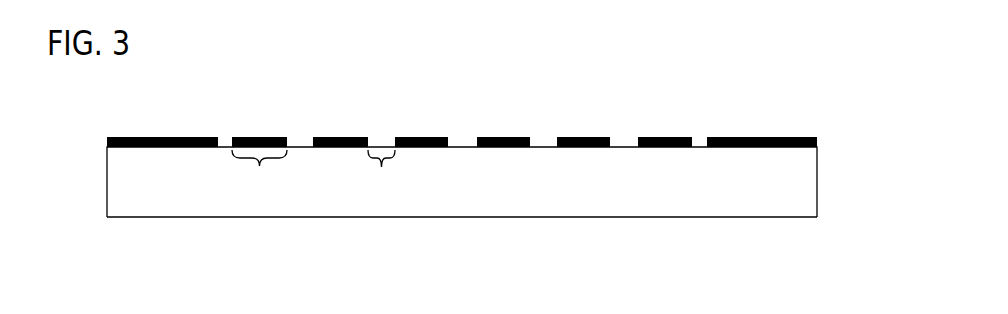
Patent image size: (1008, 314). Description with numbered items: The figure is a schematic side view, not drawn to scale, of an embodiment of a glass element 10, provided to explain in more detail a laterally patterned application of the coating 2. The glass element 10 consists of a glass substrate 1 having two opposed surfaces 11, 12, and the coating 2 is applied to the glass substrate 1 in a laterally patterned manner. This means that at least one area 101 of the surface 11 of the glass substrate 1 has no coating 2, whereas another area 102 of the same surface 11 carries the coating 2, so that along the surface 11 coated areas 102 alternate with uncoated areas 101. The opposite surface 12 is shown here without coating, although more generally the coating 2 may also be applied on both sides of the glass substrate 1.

The glass substrate 1 is at (187, 195).
The coating 2 is at (758, 137).
The glass element 10 is at (477, 68).
The surface 11 is at (305, 147).
The surface 12 is at (330, 217).
The area 101 is at (381, 180).
The area 102 is at (259, 181).